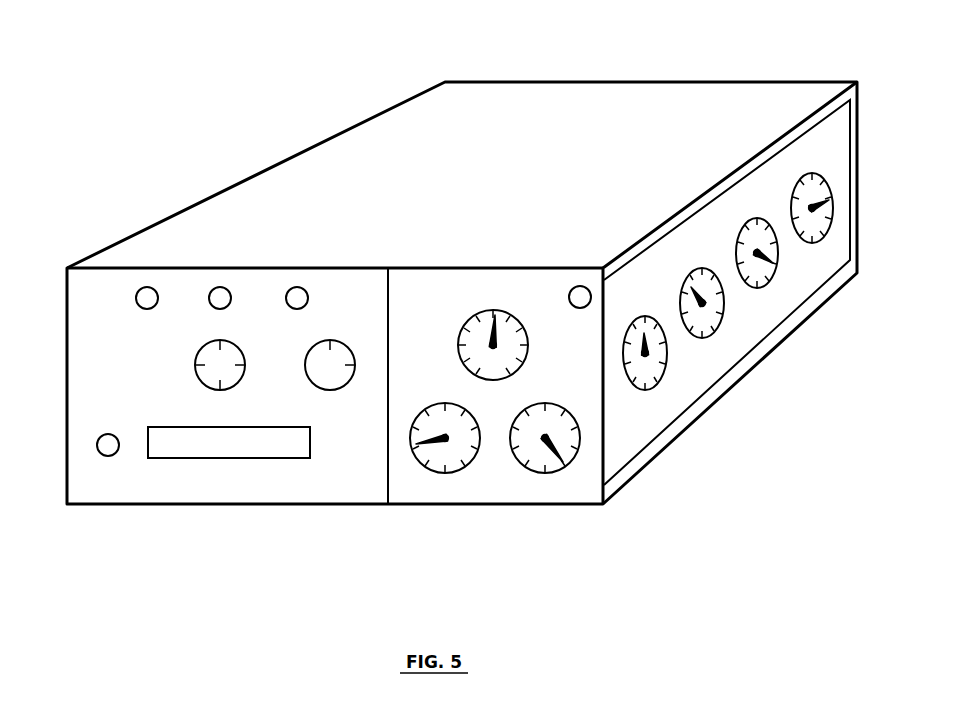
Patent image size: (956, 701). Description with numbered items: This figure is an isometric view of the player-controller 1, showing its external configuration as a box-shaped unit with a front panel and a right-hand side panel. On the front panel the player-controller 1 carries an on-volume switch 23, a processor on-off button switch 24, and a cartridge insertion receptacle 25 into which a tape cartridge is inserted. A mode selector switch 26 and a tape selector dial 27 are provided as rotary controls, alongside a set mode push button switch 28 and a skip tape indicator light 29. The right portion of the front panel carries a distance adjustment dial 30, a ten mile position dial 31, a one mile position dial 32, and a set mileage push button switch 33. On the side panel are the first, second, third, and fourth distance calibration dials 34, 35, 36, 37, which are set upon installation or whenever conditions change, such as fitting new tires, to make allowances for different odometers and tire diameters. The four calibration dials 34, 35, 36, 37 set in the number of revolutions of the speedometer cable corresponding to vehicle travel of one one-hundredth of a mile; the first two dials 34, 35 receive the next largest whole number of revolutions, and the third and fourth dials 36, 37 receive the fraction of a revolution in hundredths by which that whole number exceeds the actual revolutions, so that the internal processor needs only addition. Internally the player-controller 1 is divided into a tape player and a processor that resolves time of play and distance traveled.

The player-controller 1 is at (598, 115).
The on-volume switch 23 is at (112, 455).
The processor on-off button switch 24 is at (155, 290).
The cartridge insertion receptacle 25 is at (238, 445).
The mode selector switch 26 is at (197, 375).
The tape selector dial 27 is at (331, 345).
The set mode push button switch 28 is at (227, 290).
The skip tape indicator light 29 is at (300, 290).
The distance adjustment dial 30 is at (503, 312).
The ten mile position dial 31 is at (455, 472).
The one mile position dial 32 is at (556, 472).
The set mileage push button switch 33 is at (583, 288).
The first distance calibration dial 34 is at (652, 388).
The second distance calibration dial 35 is at (716, 338).
The third distance calibration dial 36 is at (766, 287).
The fourth distance calibration dial 37 is at (826, 240).